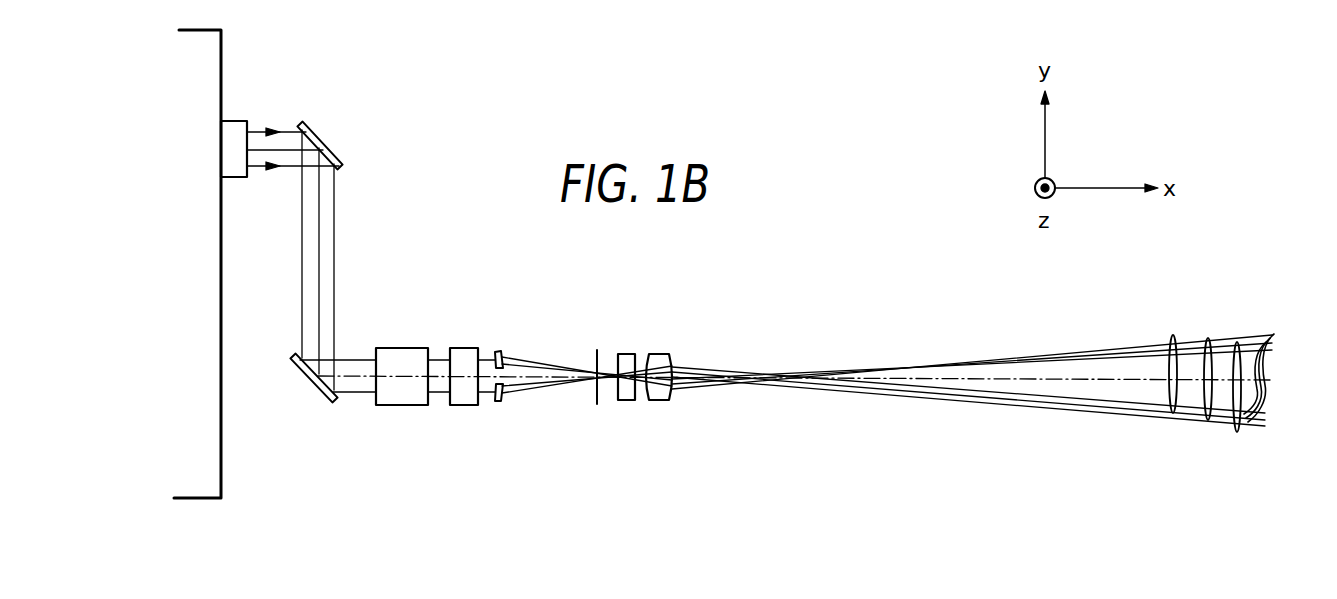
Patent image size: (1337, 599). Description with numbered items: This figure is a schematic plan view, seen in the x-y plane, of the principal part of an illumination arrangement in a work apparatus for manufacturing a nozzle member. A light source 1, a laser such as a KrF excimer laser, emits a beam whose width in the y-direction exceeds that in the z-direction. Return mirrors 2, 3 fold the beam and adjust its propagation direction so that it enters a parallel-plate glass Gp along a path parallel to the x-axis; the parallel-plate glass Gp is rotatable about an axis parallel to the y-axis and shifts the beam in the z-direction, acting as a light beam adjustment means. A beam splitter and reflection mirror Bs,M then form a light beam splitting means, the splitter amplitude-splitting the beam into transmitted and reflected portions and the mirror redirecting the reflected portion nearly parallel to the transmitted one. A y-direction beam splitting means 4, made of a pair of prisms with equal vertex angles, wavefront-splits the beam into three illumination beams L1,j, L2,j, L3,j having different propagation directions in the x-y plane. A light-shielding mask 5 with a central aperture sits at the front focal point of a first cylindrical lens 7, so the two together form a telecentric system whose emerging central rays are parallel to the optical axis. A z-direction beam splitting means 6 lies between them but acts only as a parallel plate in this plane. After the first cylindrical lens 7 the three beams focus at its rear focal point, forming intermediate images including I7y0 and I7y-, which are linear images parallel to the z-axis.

The light source 1 is at (216, 63).
The return mirror 2 is at (318, 118).
The return mirror 3 is at (307, 374).
The parallel-plate glass Gp is at (395, 348).
The beam splitter and reflection mirror Bs,M is at (459, 348).
The y-direction beam splitting means 4 is at (500, 351).
The light-shielding mask 5 is at (595, 352).
The z-direction beam splitting means 6 is at (629, 353).
The first cylindrical lens 7 is at (660, 353).
The intermediate image I7y0 is at (752, 378).
The intermediate image I7y- is at (749, 380).
The illumination beam L1,j is at (1175, 335).
The illumination beam L2,j is at (1208, 338).
The illumination beam L3,j is at (1238, 342).